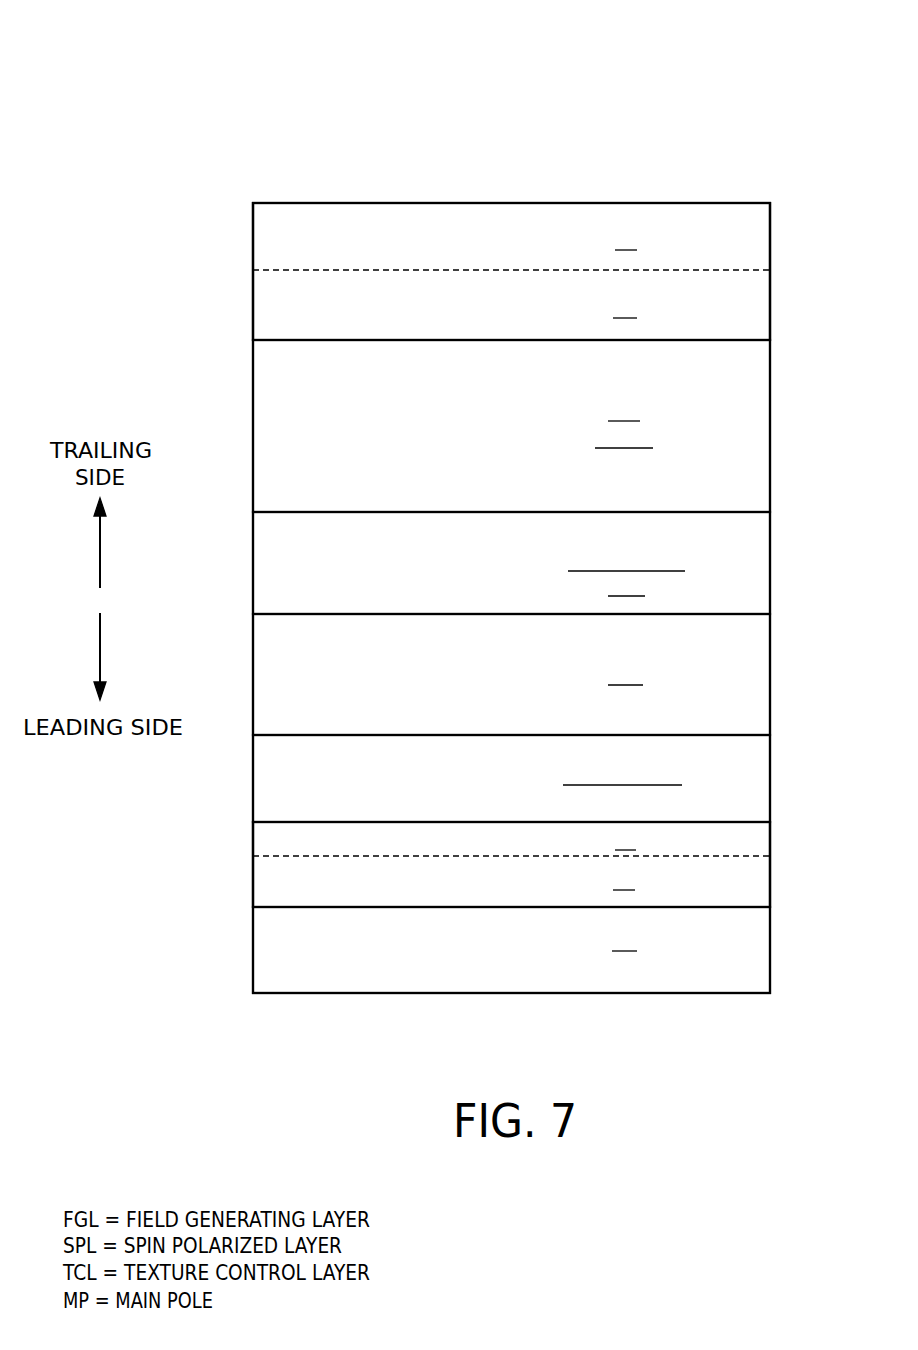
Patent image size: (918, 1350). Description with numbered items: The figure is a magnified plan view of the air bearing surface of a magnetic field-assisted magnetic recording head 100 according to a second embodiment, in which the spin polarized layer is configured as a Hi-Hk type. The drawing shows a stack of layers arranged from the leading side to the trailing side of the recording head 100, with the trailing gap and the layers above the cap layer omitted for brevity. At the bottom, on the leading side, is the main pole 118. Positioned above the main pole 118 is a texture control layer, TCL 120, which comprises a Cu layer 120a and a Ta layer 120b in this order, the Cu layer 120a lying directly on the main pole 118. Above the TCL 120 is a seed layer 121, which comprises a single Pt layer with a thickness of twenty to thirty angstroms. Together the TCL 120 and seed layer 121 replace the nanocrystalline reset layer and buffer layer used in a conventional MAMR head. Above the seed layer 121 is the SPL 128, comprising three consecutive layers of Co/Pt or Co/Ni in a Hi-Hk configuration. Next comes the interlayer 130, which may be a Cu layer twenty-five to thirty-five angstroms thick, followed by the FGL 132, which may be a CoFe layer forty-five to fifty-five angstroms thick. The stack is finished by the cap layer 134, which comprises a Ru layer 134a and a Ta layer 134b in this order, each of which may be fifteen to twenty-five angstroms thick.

The magnetic field-assisted magnetic recording (MAMR) head 100 is at (253, 44).
The cap layer 134 is at (243, 203).
The Ta layer 134b is at (533, 250).
The Ru layer 134a is at (533, 318).
The FGL 132 is at (525, 435).
The interlayer 130 is at (527, 575).
The SPL 128 is at (527, 685).
The seed layer 121 is at (525, 785).
The TCL 120 is at (243, 820).
The Ta layer 120b is at (532, 850).
The Cu layer 120a is at (532, 890).
The main pole 118 is at (525, 951).